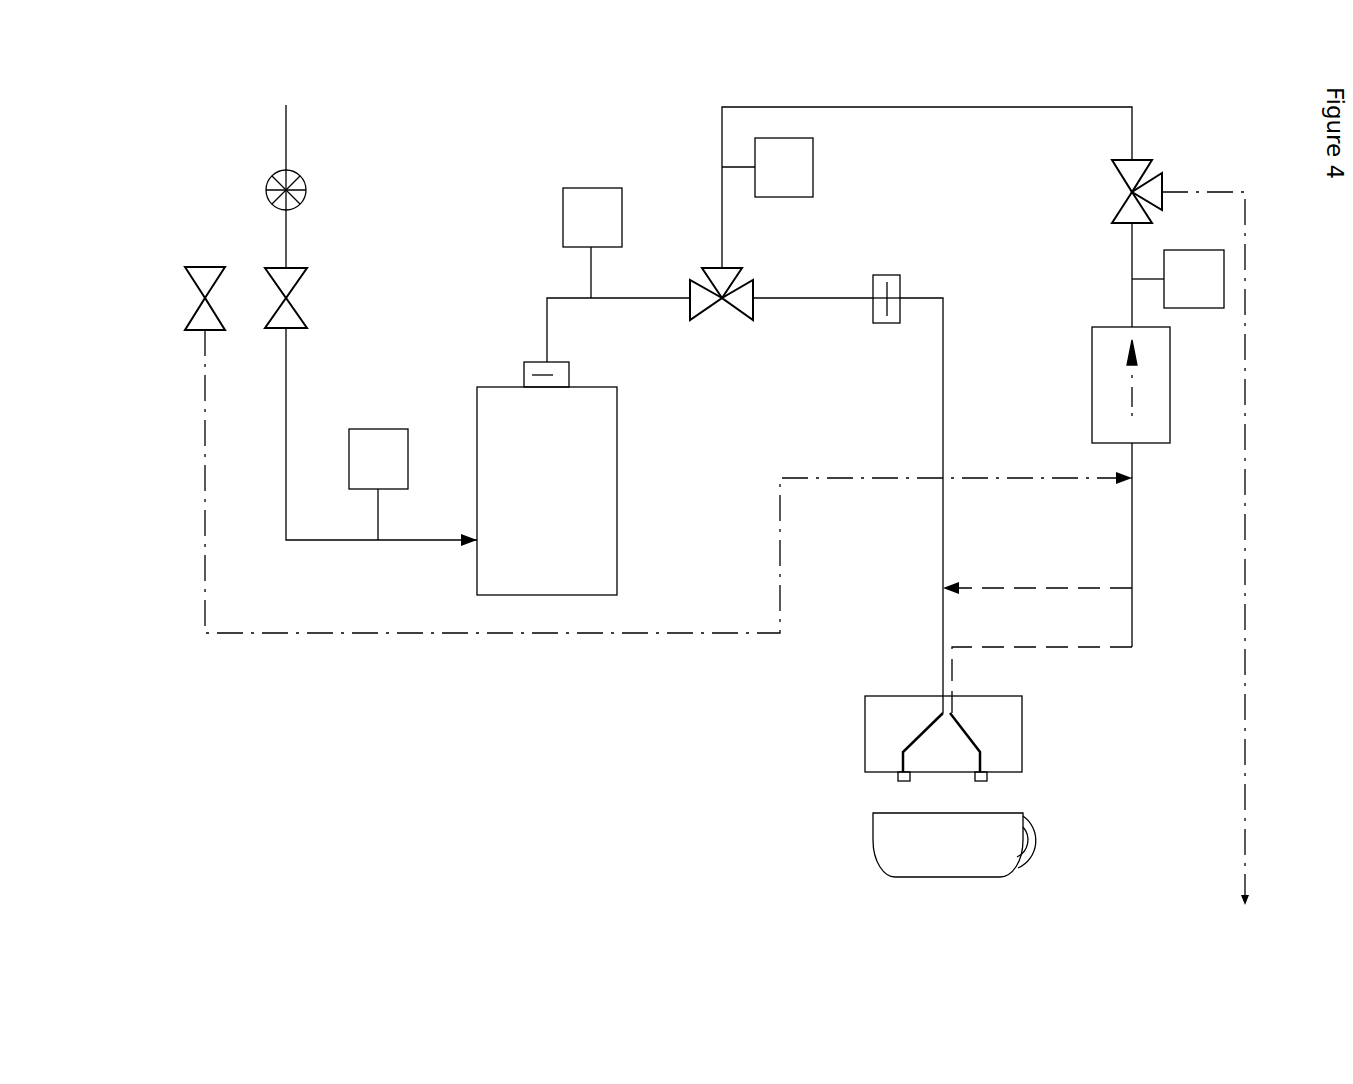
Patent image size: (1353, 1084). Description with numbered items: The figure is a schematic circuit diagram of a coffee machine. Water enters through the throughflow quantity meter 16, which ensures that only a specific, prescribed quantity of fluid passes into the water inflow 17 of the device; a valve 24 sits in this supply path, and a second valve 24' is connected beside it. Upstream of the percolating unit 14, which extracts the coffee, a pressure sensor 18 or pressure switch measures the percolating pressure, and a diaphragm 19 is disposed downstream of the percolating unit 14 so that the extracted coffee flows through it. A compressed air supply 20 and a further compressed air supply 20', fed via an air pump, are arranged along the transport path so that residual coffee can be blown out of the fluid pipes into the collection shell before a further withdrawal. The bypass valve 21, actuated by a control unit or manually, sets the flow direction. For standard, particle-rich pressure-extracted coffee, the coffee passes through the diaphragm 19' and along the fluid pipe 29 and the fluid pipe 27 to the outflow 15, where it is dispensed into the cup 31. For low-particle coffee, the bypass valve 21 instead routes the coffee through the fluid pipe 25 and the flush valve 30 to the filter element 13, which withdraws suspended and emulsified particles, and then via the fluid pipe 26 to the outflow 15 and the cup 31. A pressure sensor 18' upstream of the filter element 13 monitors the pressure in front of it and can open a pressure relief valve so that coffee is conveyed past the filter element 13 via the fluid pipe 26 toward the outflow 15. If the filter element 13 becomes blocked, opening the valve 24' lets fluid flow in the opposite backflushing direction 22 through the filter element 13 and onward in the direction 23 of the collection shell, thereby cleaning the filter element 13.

The filter element 13 is at (1172, 385).
The percolating unit 14 is at (617, 490).
The outflow 15 is at (865, 733).
The throughflow quantity meter 16 is at (268, 178).
The water inflow 17 is at (285, 405).
The pressure sensor 18 is at (378, 484).
The pressure sensor 18' is at (1178, 279).
The diaphragm 19 is at (607, 346).
The diaphragm 19' is at (938, 266).
The compressed air supply 20 is at (592, 243).
The compressed air supply 20' is at (767, 167).
The bypass valve 21 is at (743, 263).
The fluid flow during backflushing 22 is at (417, 763).
The direction of collection shell 23 is at (1212, 577).
The valve 24 is at (343, 297).
The valve 24' is at (149, 297).
The fluid pipe 25 is at (952, 106).
The fluid pipe 26 is at (1138, 530).
The fluid pipe 27 is at (943, 622).
The fluid pipe 29 is at (945, 435).
The flush valve 30 is at (1150, 172).
The cup 31 is at (915, 845).